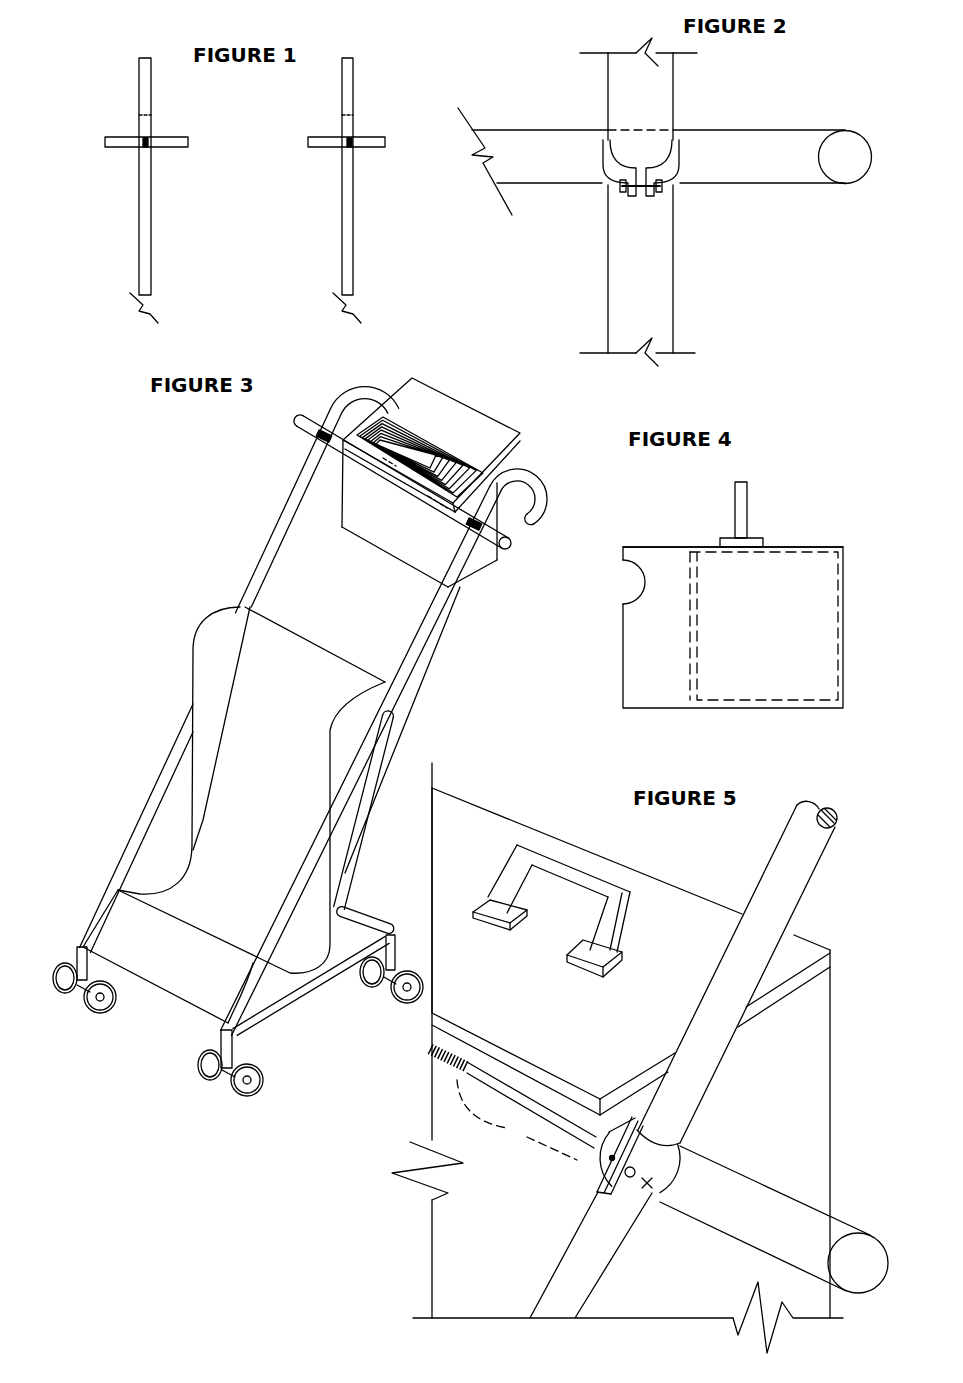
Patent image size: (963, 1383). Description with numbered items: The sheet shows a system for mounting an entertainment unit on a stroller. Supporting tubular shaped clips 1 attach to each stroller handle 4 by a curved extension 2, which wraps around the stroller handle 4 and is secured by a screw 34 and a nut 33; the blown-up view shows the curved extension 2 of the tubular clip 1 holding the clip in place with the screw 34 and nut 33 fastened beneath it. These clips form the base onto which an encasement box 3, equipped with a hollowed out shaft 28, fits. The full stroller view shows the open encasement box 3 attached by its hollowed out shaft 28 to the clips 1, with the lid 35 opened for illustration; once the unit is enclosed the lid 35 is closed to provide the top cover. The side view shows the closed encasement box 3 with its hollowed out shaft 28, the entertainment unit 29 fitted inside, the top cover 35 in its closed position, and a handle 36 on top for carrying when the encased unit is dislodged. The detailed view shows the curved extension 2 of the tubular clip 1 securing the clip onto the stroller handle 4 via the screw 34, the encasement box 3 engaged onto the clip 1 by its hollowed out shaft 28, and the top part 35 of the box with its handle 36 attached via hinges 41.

In FIG. 1, the tubular shaped clip 1 is at (308, 138).
In FIG. 2, the tubular shaped clip 1 is at (815, 130).
In FIG. 3, the tubular shaped clip 1 is at (305, 418).
In FIG. 5, the tubular shaped clip 1 is at (847, 1223).
In FIG. 1, the curved extension 2 is at (340, 148).
In FIG. 2, the curved extension 2 is at (680, 168).
In FIG. 5, the curved extension 2 is at (655, 1198).
In FIG. 3, the encasement box 3 is at (445, 453).
In FIG. 4, the encasement box 3 is at (843, 630).
In FIG. 5, the encasement box 3 is at (832, 1093).
In FIG. 1, the stroller handle 4 is at (342, 263).
In FIG. 2, the stroller handle 4 is at (673, 80).
In FIG. 3, the stroller handle 4 is at (292, 490).
In FIG. 5, the stroller handle 4 is at (800, 892).
In FIG. 3, the hollowed out shaft 28 is at (417, 497).
In FIG. 4, the hollowed out shaft 28 is at (632, 578).
In FIG. 5, the hollowed out shaft 28 is at (498, 1093).
In FIG. 4, the entertainment unit 29 is at (707, 550).
In FIG. 2, the nut 33 is at (632, 186).
In FIG. 2, the screw 34 is at (652, 190).
In FIG. 5, the screw 34 is at (632, 1178).
In FIG. 3, the lid 35 is at (427, 386).
In FIG. 4, the lid 35 is at (814, 546).
In FIG. 4, the handle 36 is at (748, 482).
In FIG. 5, the handle 36 is at (517, 850).
In FIG. 5, the hinges 41 is at (488, 902).